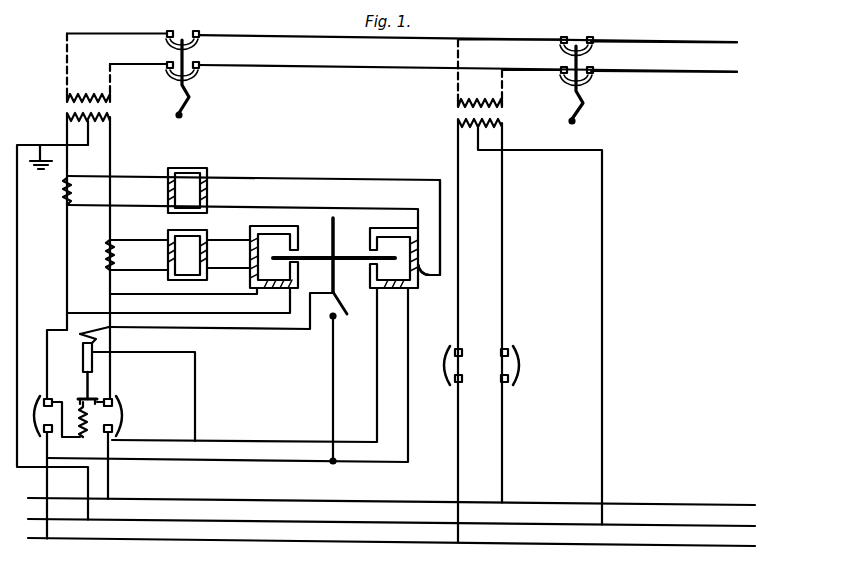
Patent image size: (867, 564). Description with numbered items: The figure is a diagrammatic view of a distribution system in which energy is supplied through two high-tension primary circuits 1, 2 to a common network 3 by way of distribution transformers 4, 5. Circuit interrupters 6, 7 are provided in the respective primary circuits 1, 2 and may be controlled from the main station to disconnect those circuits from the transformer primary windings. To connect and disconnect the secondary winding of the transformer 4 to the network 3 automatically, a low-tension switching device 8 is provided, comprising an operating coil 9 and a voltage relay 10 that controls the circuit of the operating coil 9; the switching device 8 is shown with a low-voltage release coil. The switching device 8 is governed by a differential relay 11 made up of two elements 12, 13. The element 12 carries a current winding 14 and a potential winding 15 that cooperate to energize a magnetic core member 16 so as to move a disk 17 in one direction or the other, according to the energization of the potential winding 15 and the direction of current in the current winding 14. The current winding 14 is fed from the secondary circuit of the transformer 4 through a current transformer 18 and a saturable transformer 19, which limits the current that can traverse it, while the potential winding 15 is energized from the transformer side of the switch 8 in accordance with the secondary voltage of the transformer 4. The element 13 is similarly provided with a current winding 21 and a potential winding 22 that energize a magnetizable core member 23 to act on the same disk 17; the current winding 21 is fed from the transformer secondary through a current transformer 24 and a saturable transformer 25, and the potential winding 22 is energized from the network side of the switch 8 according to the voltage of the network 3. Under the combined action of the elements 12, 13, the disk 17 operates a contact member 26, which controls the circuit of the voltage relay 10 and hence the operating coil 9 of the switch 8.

The high-tension primary circuit 1 is at (291, 44).
The high-tension primary circuit 2 is at (657, 60).
The common network 3 is at (275, 504).
The distribution transformer 4 is at (107, 106).
The distribution transformer 5 is at (503, 110).
The circuit interrupter 6 is at (198, 44).
The circuit interrupter 7 is at (592, 52).
The switching device 8 is at (38, 436).
The operating coil 9 is at (90, 437).
The voltage relay 10 is at (100, 335).
The differential relay 11 is at (357, 208).
The relay element 12 is at (252, 229).
The relay element 13 is at (389, 228).
The current winding 14 is at (253, 252).
The potential winding 15 is at (268, 285).
The magnetic core member 16 is at (299, 236).
The movable disk 17 is at (346, 261).
The current transformer 18 is at (114, 256).
The saturable transformer 19 is at (192, 270).
The current winding 21 is at (424, 273).
The potential winding 22 is at (382, 291).
The magnetizable core member 23 is at (400, 233).
The current transformer 24 is at (70, 192).
The saturable transformer 25 is at (190, 183).
The contact member 26 is at (338, 305).